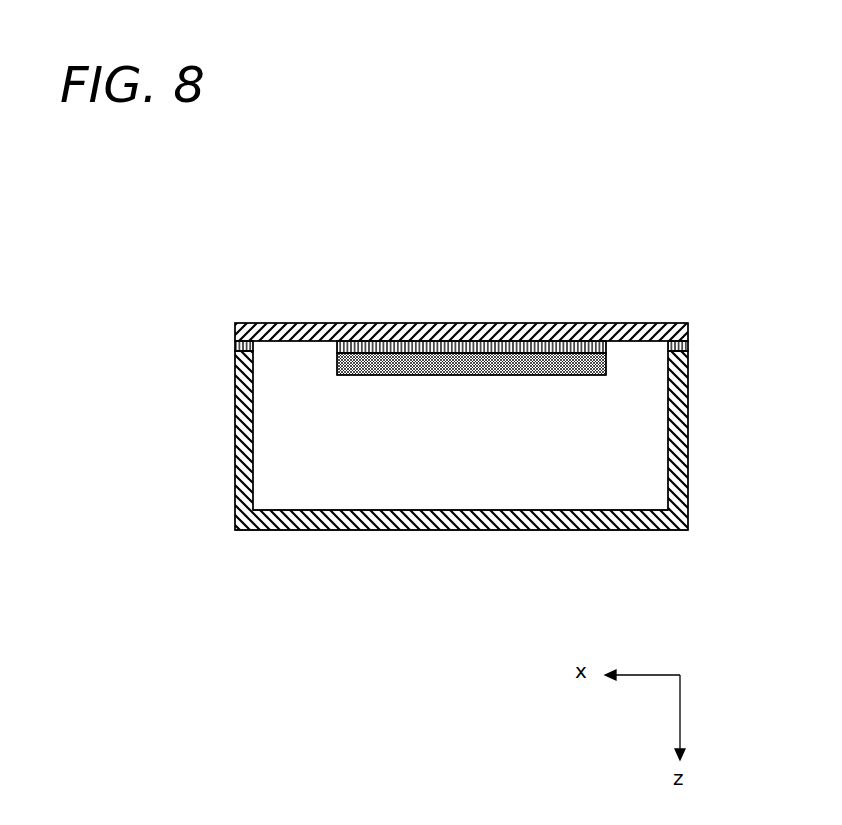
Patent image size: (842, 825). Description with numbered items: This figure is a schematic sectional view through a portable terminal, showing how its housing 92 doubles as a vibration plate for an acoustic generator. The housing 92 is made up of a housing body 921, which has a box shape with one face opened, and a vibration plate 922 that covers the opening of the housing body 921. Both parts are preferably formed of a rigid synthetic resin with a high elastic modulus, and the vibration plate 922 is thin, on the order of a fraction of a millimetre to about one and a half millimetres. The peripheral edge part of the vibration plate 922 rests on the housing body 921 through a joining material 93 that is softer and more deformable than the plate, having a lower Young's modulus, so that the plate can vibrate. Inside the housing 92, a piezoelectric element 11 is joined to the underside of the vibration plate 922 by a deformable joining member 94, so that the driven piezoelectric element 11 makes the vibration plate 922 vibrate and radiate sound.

The piezoelectric element 11 is at (570, 373).
The housing 92 is at (461, 520).
The housing body 921 is at (455, 515).
The vibration plate 922 is at (287, 341).
The joining material 93 is at (236, 345).
The joining member 94 is at (402, 345).